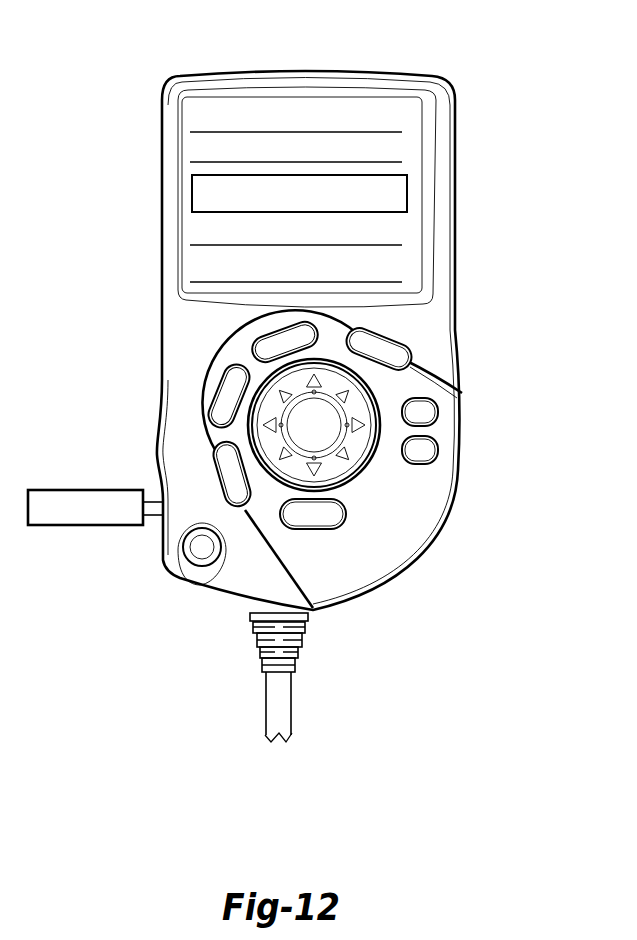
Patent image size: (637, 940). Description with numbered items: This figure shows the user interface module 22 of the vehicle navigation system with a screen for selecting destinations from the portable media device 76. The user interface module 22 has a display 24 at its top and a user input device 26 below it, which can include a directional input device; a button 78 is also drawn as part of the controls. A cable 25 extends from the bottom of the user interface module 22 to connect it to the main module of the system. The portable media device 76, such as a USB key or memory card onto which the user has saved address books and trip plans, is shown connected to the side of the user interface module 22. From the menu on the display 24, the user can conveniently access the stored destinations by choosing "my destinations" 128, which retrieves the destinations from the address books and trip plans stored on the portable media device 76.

The user interface module 22 is at (403, 76).
The display 24 is at (343, 156).
The cable 25 is at (285, 702).
The user input device 26 is at (415, 512).
The portable media device 76 is at (80, 490).
The button 78 is at (384, 343).
The my destinations 128 is at (387, 238).